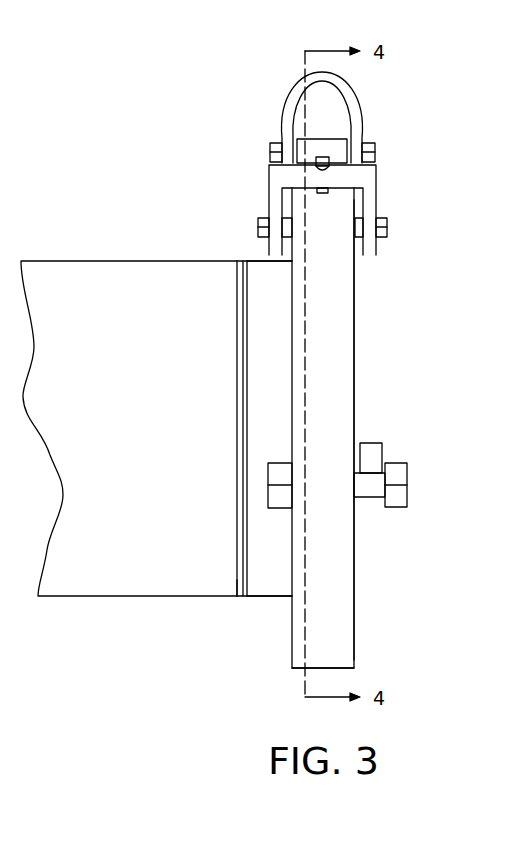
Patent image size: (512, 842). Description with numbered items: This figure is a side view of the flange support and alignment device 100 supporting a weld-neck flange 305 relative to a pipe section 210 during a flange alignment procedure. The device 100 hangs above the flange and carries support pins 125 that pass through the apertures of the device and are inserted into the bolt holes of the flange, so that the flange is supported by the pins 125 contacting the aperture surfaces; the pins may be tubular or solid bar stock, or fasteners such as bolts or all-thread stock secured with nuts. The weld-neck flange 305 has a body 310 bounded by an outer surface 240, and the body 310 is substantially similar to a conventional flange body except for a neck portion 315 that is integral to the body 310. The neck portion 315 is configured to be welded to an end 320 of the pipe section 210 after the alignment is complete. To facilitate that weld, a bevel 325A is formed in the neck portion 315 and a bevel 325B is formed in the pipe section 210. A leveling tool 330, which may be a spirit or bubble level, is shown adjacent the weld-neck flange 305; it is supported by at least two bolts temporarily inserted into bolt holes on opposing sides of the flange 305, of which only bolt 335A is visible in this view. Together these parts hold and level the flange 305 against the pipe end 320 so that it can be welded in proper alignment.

The flange support and alignment device 100 is at (388, 112).
The support pins 125 is at (397, 224).
The pipe section 210 is at (192, 460).
The outer surface 240 is at (340, 368).
The weld-neck flange 305 is at (358, 617).
The body 310 is at (355, 312).
The neck portion 315 is at (271, 581).
The end 320 is at (238, 260).
The bevel 325A is at (247, 260).
The bevel 325B is at (237, 600).
The leveling tool 330 is at (372, 443).
The bolt 335A is at (375, 497).